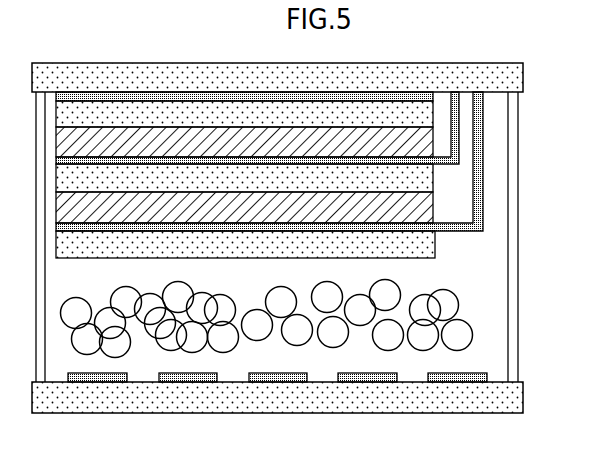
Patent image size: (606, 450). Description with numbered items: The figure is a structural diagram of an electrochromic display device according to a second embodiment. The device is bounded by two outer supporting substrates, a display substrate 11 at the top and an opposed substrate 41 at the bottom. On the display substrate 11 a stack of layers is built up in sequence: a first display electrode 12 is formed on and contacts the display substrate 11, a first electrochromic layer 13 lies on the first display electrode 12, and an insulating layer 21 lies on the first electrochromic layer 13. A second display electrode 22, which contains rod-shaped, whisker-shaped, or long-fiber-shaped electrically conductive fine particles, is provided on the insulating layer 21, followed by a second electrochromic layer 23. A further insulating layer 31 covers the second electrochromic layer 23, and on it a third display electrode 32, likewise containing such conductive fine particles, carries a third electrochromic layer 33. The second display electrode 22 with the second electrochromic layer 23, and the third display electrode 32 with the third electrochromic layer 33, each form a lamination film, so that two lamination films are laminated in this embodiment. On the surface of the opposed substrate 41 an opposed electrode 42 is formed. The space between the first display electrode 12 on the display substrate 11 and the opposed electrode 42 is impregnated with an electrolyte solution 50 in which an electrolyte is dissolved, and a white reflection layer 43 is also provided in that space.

The display substrate 11 is at (520, 73).
The first display electrode 12 is at (459, 98).
The first electrochromic layer 13 is at (433, 114).
The insulating layer 21 is at (433, 142).
The second display electrode 22 is at (459, 158).
The second electrochromic layer 23 is at (433, 180).
The insulating layer 31 is at (433, 203).
The third display electrode 32 is at (483, 226).
The third electrochromic layer 33 is at (435, 243).
The opposed substrate 41 is at (517, 395).
The opposed electrode 42 is at (475, 373).
The white reflection layer 43 is at (473, 338).
The electrolyte solution 50 is at (470, 283).